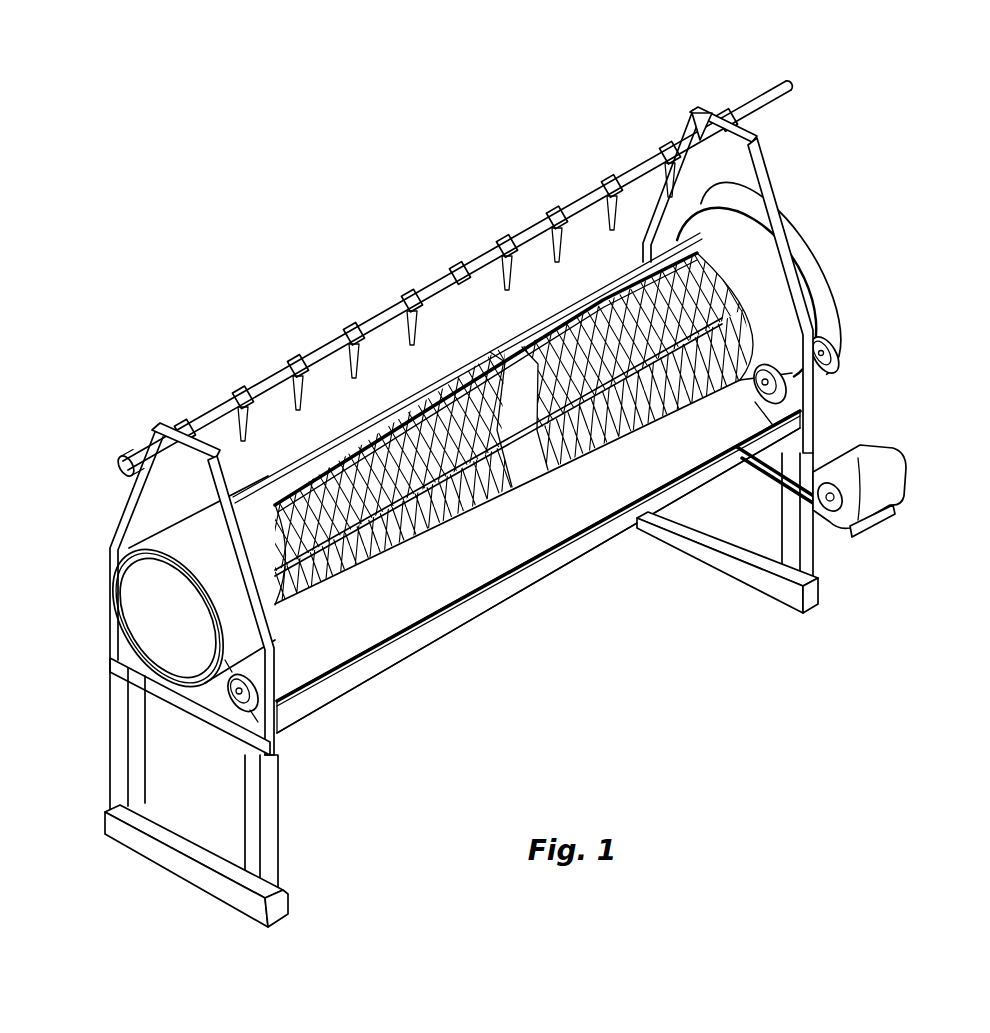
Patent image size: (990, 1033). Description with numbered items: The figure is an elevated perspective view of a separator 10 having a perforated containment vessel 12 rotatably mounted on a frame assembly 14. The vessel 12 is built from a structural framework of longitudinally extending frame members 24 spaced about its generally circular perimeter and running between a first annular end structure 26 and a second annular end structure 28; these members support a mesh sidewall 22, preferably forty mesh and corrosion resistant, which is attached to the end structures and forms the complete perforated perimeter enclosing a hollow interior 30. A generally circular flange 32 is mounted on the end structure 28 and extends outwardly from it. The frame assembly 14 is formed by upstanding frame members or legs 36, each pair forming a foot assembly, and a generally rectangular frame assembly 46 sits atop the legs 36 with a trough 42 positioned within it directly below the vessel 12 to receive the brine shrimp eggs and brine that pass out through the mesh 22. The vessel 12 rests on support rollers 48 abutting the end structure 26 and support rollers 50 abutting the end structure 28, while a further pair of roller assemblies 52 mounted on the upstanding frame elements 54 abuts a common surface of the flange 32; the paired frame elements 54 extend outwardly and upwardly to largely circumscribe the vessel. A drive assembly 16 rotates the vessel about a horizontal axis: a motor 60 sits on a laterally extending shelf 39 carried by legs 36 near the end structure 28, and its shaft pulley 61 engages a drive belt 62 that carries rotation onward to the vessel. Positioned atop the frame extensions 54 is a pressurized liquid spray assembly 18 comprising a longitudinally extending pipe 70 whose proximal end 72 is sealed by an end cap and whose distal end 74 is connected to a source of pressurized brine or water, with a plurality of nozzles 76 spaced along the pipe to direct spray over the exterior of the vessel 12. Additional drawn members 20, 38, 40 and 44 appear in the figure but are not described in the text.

The separator 10 is at (256, 328).
The containment vessel 12 is at (370, 580).
The frame assembly 14 is at (458, 517).
The drive assembly 16 is at (848, 516).
The liquid spray assembly 18 is at (587, 198).
The lower longitudinal support bar 20 is at (493, 513).
The mesh sidewall 22 is at (673, 412).
The longitudinally extending frame members 24 is at (547, 337).
The first annular end structure 26 is at (180, 533).
The second annular end structure 28 is at (770, 282).
The hollow interior 30 is at (140, 590).
The flange 32 is at (827, 315).
The upstanding frame members 36 is at (807, 567).
The base members 38 is at (747, 576).
The shelf 39 is at (880, 530).
The side rail 40 is at (350, 653).
The trough 42 is at (490, 568).
The lower rail member 44 is at (470, 608).
The frame assembly 46 is at (123, 664).
The support rollers 48 is at (255, 680).
The support rollers 50 is at (790, 386).
The roller assemblies 52 is at (840, 350).
The upstanding frame elements 54 is at (770, 172).
The motor 60 is at (892, 473).
The pulley 61 is at (837, 486).
The drive belt 62 is at (770, 488).
The pipe 70 is at (434, 282).
The proximal end 72 is at (127, 457).
The distal end 74 is at (797, 86).
The nozzles 76 is at (512, 252).